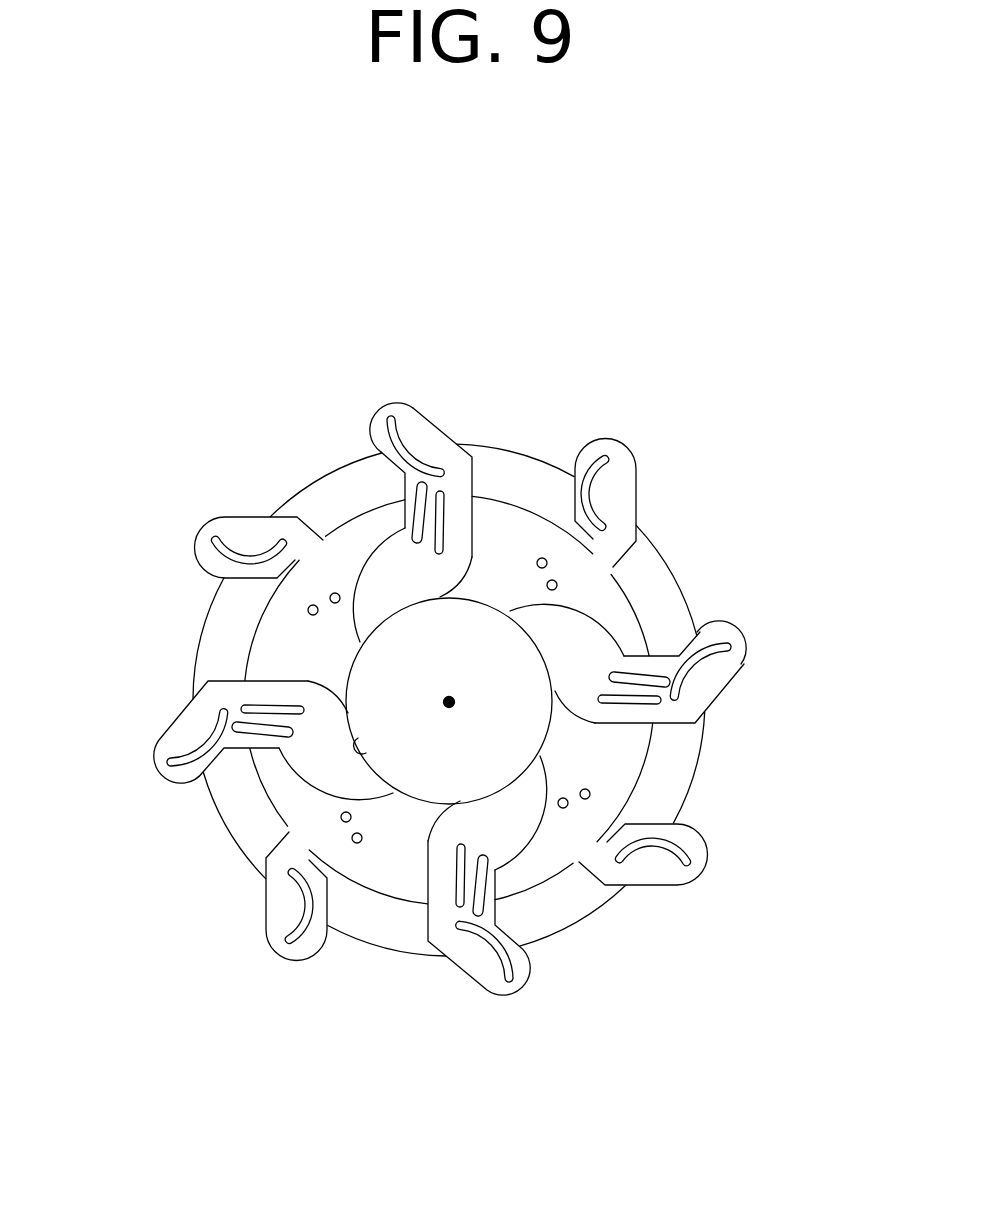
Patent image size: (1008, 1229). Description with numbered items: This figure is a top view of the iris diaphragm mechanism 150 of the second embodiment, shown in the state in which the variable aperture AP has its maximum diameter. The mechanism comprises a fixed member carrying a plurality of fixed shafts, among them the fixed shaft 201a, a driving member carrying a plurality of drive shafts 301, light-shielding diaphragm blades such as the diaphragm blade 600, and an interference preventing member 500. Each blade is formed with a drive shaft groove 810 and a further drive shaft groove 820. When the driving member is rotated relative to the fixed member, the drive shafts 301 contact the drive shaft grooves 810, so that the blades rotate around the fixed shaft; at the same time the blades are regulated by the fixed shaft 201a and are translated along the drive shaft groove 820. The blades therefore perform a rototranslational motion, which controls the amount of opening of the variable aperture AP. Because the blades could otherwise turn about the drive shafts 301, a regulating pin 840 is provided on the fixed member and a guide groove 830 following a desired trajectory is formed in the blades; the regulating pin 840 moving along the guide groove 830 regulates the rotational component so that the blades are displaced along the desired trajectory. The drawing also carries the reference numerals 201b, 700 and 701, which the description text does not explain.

The iris diaphragm mechanism 150 is at (235, 947).
The fixed shaft 201a is at (450, 500).
The pin 201b is at (557, 582).
The drive shaft 301 is at (393, 407).
The interference preventing member 500 is at (285, 783).
The diaphragm blade 600 is at (508, 823).
The lens holder 700 is at (355, 668).
The optical axis 701 is at (449, 702).
The drive shaft groove 810 is at (745, 643).
The drive shaft groove 820 is at (660, 720).
The guide groove 830 is at (642, 662).
The regulating pin 840 is at (407, 505).
The variable aperture AP is at (364, 757).